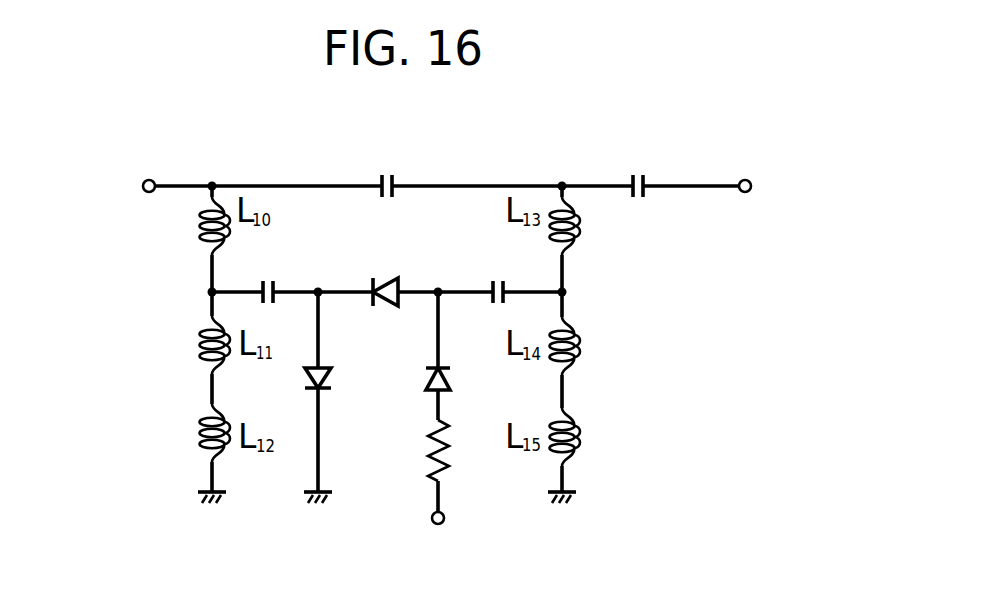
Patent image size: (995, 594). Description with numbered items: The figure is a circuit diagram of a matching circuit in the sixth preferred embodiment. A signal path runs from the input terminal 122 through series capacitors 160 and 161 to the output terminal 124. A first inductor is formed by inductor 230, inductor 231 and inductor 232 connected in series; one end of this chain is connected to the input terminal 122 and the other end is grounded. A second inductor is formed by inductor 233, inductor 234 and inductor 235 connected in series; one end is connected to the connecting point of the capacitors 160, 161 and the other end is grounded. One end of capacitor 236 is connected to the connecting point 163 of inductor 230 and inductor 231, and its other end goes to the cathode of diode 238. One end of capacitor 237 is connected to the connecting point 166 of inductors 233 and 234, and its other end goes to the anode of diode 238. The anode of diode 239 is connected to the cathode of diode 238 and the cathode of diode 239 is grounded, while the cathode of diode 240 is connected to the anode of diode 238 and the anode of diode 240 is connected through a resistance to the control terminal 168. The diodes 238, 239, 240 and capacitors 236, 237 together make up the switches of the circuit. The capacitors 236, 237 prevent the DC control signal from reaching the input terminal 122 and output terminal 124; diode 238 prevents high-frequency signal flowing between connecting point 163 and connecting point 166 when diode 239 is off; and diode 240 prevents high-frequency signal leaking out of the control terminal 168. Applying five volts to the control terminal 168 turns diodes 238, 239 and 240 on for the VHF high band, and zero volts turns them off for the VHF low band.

The input terminal 122 is at (145, 180).
The output terminal 124 is at (749, 178).
The capacitor 160 is at (385, 170).
The capacitor 161 is at (637, 168).
The connecting point 163 is at (207, 294).
The connecting point 166 is at (568, 293).
The control terminal 168 is at (444, 522).
The inductor 230 is at (196, 227).
The inductor 231 is at (196, 352).
The inductor 232 is at (196, 442).
The inductor 233 is at (580, 224).
The inductor 234 is at (580, 350).
The inductor 235 is at (580, 437).
The capacitor 236 is at (265, 278).
The capacitor 237 is at (498, 278).
The diode 238 is at (390, 277).
The diode 239 is at (305, 392).
The diode 240 is at (428, 395).